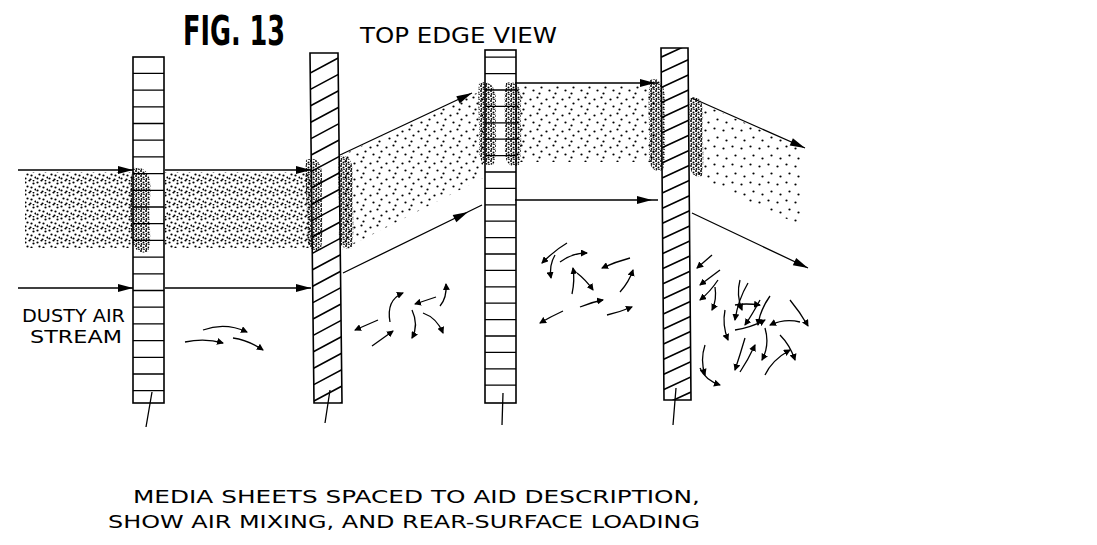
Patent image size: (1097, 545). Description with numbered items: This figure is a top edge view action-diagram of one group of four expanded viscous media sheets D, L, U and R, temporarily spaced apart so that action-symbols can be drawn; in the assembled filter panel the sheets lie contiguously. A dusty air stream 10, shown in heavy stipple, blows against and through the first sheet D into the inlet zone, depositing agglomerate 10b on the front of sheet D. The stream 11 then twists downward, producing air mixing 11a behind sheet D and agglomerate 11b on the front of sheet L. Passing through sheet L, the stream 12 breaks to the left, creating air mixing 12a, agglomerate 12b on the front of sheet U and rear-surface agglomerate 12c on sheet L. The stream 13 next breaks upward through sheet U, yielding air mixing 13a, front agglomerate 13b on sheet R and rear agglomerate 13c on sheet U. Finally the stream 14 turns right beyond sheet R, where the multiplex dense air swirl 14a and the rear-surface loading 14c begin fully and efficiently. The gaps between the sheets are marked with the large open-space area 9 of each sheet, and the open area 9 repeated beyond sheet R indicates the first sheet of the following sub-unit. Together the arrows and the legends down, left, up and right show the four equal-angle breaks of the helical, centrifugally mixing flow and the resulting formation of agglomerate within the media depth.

The open-space area 9 is at (436, 248).
The dusty air stream 10 is at (58, 197).
The agglomerate on front of sheet D 10b is at (133, 208).
The dusty air stream 11 is at (240, 195).
The air mixing 11a is at (224, 347).
The agglomerate on front of sheet L 11b is at (302, 225).
The dusty air stream 12 is at (410, 103).
The air mixing 12a is at (400, 329).
The agglomerate on front of sheet U 12b is at (483, 140).
The agglomerate on rear of sheet L 12c is at (342, 208).
The dusty air stream 13 is at (600, 98).
The air mixing 13a is at (586, 310).
The agglomerate on front of sheet R 13b is at (655, 132).
The agglomerate on rear of sheet U 13c is at (517, 140).
The dusty air stream 14 is at (752, 145).
The multiplex dense air swirl 14a is at (752, 331).
The rear-surface loading of agglomerate 14c is at (692, 150).